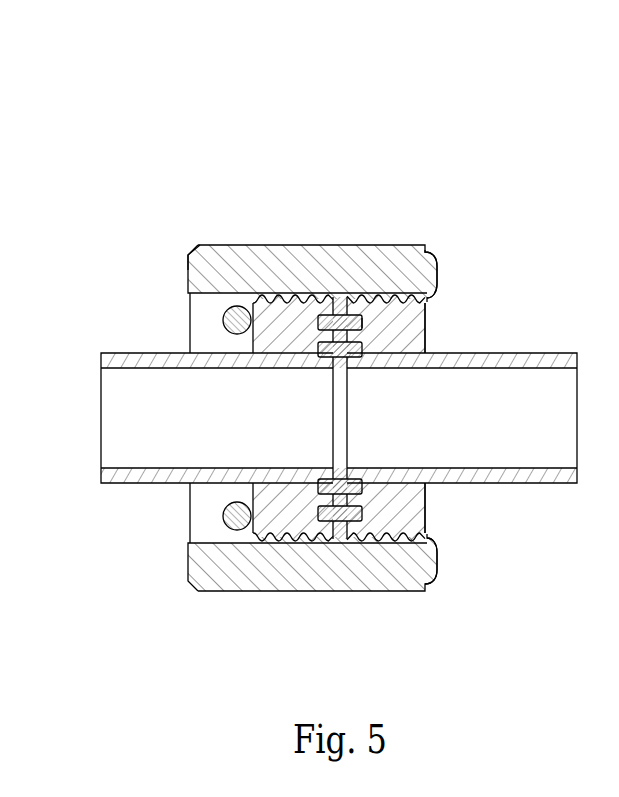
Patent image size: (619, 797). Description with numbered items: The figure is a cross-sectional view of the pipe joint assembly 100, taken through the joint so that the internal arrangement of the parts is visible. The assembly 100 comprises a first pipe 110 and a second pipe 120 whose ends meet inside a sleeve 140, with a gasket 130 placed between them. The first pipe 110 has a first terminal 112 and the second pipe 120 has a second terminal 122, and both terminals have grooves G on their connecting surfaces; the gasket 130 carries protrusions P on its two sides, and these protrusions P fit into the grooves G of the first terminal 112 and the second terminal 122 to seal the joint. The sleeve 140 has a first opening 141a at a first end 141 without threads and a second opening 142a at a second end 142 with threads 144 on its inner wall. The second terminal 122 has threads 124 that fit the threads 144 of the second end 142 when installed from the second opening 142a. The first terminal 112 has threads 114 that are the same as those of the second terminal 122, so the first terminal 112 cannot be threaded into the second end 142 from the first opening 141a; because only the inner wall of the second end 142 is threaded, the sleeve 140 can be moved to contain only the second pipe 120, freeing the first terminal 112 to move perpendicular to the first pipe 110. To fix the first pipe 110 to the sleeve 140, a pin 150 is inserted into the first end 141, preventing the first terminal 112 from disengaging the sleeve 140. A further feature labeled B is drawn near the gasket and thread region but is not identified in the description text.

The pipe joint assembly 100 is at (517, 46).
The first pipe 110 is at (175, 483).
The second pipe 120 is at (502, 483).
The first terminal 112 is at (277, 513).
The threads 114 is at (290, 545).
The second terminal 122 is at (418, 540).
The threads 124 is at (403, 503).
The gasket 130 is at (413, 331).
The sleeve 140 is at (313, 247).
The first end 141 is at (213, 247).
The first opening 141a is at (171, 291).
The second end 142 is at (420, 272).
The second opening 142a is at (462, 298).
The threads 144 is at (373, 543).
The pin 150 is at (223, 318).
The protrusions P is at (350, 317).
The thread ridge B is at (363, 320).
The grooves G is at (363, 322).